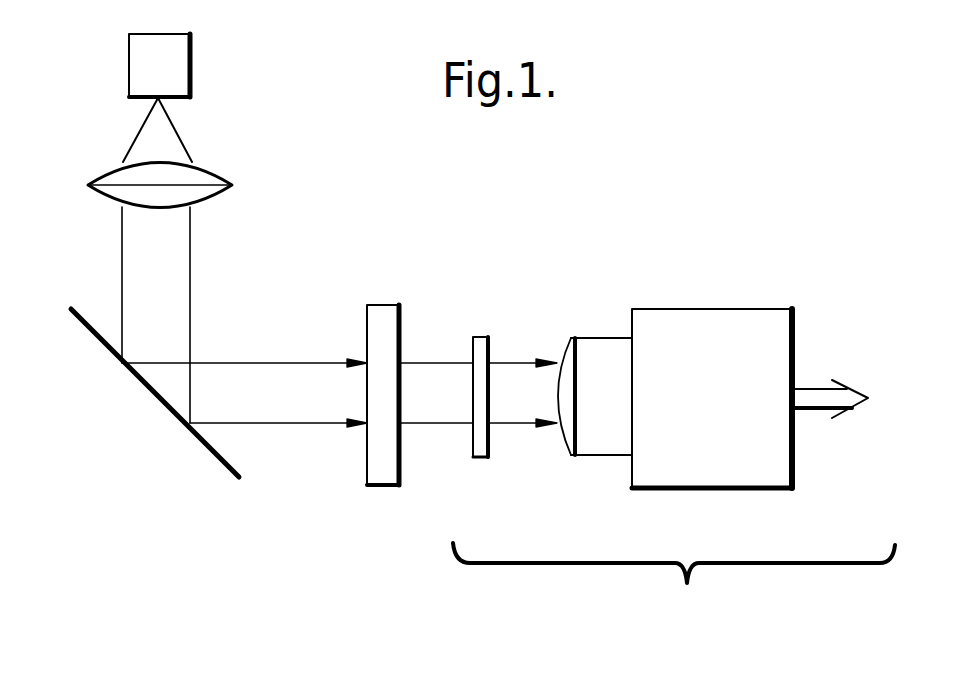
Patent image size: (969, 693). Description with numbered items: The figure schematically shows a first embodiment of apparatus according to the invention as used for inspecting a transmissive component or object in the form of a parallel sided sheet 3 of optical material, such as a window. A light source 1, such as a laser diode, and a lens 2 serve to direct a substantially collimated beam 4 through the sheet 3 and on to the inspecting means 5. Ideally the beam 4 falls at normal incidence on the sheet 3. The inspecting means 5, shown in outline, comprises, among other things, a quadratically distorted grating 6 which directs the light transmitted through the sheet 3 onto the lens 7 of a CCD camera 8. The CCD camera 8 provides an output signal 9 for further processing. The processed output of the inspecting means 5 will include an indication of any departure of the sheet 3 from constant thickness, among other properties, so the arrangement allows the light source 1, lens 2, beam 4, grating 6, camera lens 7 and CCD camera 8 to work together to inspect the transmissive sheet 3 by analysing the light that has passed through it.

The light source 1 is at (147, 73).
The lens 2 is at (112, 175).
The sheet 3 is at (382, 312).
The beam 4 is at (284, 405).
The inspecting means 5 is at (674, 584).
The quadratically distorted grating 6 is at (478, 447).
The lens of CCD camera 7 is at (568, 435).
The CCD camera 8 is at (724, 424).
The output signal 9 is at (815, 402).